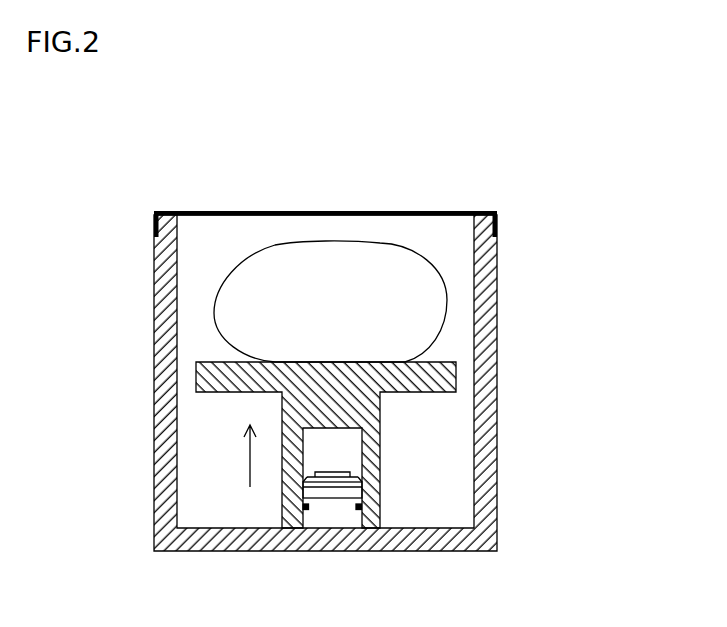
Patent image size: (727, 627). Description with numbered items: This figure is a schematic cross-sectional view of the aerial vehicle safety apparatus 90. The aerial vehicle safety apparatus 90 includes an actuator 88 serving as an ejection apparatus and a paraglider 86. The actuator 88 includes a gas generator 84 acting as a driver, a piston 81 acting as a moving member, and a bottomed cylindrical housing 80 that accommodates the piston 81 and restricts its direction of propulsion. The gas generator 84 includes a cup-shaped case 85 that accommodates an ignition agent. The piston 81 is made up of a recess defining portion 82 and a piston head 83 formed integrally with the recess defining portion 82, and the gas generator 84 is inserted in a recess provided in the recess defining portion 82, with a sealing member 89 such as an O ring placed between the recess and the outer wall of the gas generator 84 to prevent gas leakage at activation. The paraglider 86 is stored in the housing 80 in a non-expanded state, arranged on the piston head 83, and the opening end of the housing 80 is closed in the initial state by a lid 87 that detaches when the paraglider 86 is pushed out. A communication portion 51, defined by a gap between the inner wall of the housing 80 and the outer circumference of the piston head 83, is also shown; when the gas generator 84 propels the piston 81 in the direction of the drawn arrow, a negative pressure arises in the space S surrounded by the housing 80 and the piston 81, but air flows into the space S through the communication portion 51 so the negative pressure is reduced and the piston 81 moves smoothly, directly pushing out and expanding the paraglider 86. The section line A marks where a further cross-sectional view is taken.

The aerial vehicle safety apparatus 90 is at (123, 156).
The housing 80 is at (487, 276).
The lid 87 is at (423, 212).
The paraglider 86 is at (388, 298).
The piston 81 is at (565, 365).
The piston head 83 is at (440, 377).
The recess defining portion 82 is at (374, 450).
The gas generator 84 is at (342, 513).
The cup-shaped case 85 is at (347, 491).
The sealing member 89 is at (306, 510).
The actuator 88 is at (445, 488).
The communication portion 51 is at (188, 373).
The space S is at (222, 473).
The line A- A is at (127, 368).